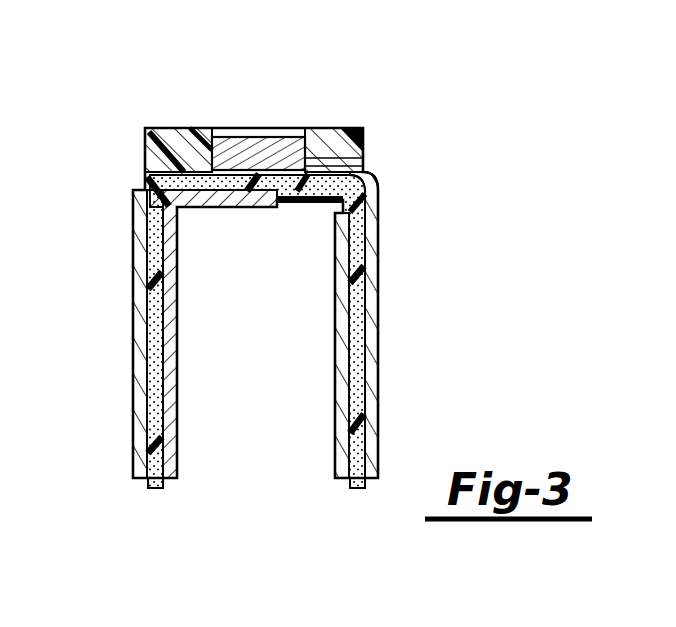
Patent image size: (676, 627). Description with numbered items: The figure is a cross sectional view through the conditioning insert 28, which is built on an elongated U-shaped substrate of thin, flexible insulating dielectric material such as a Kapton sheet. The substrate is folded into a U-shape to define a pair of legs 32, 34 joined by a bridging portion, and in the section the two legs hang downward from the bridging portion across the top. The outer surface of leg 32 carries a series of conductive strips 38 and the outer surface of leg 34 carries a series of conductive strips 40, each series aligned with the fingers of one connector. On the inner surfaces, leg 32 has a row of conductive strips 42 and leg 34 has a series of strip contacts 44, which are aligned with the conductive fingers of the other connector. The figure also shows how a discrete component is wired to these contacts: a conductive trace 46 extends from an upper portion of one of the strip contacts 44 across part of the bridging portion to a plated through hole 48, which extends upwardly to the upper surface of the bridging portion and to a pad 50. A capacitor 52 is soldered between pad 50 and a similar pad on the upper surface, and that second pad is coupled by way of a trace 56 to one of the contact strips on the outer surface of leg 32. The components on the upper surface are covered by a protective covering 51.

The conditioning insert 28 is at (413, 219).
The leg 32 is at (357, 490).
The leg 34 is at (155, 490).
The conductive strips 38 is at (367, 340).
The conductive strips 40 is at (133, 297).
The conductive strips 42 is at (338, 349).
The strip contacts 44 is at (178, 352).
The conductive trace 46 is at (222, 207).
The plated through hole 48 is at (268, 207).
The pad 50 is at (228, 188).
The protective covering 51 is at (347, 128).
The capacitor 52 is at (258, 162).
The trace 56 is at (374, 172).